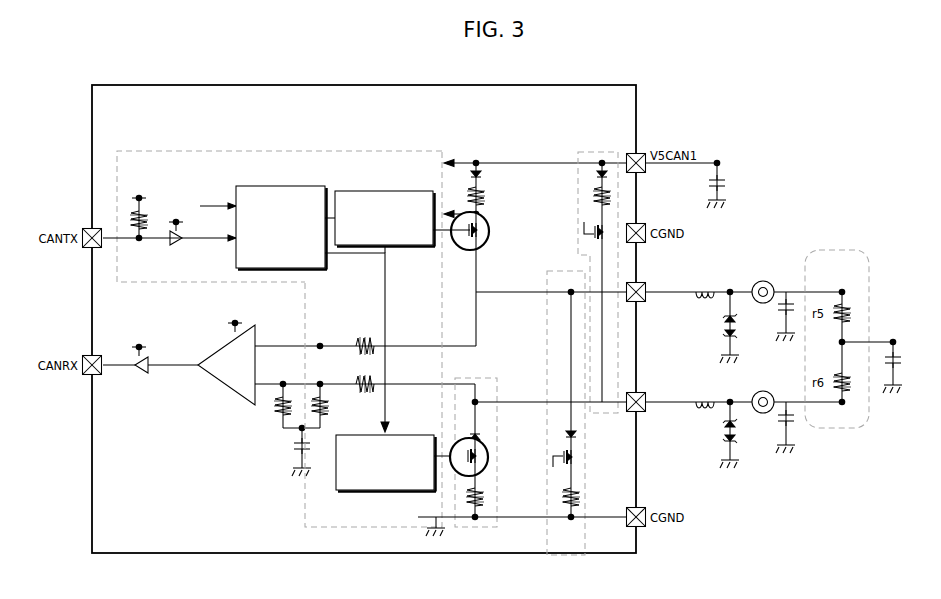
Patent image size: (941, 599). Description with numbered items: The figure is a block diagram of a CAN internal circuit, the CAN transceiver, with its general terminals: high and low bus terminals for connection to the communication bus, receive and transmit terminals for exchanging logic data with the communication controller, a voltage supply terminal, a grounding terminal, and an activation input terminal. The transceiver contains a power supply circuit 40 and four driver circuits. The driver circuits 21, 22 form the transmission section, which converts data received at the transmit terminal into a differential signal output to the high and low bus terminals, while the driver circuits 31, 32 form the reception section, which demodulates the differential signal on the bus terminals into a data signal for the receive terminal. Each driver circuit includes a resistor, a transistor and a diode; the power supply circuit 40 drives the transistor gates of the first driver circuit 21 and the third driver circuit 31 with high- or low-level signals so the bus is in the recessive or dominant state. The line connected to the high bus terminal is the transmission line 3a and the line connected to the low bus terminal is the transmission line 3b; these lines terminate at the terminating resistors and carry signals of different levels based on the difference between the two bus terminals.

The power supply circuit 40 is at (289, 289).
The first driver circuit 21 is at (466, 314).
The driver circuit 22 is at (587, 257).
The third driver circuit 31 is at (430, 486).
The driver circuit 32 is at (599, 432).
The transmission line connected to CANH 3a is at (640, 256).
The transmission line connected to CANL 3b is at (637, 456).